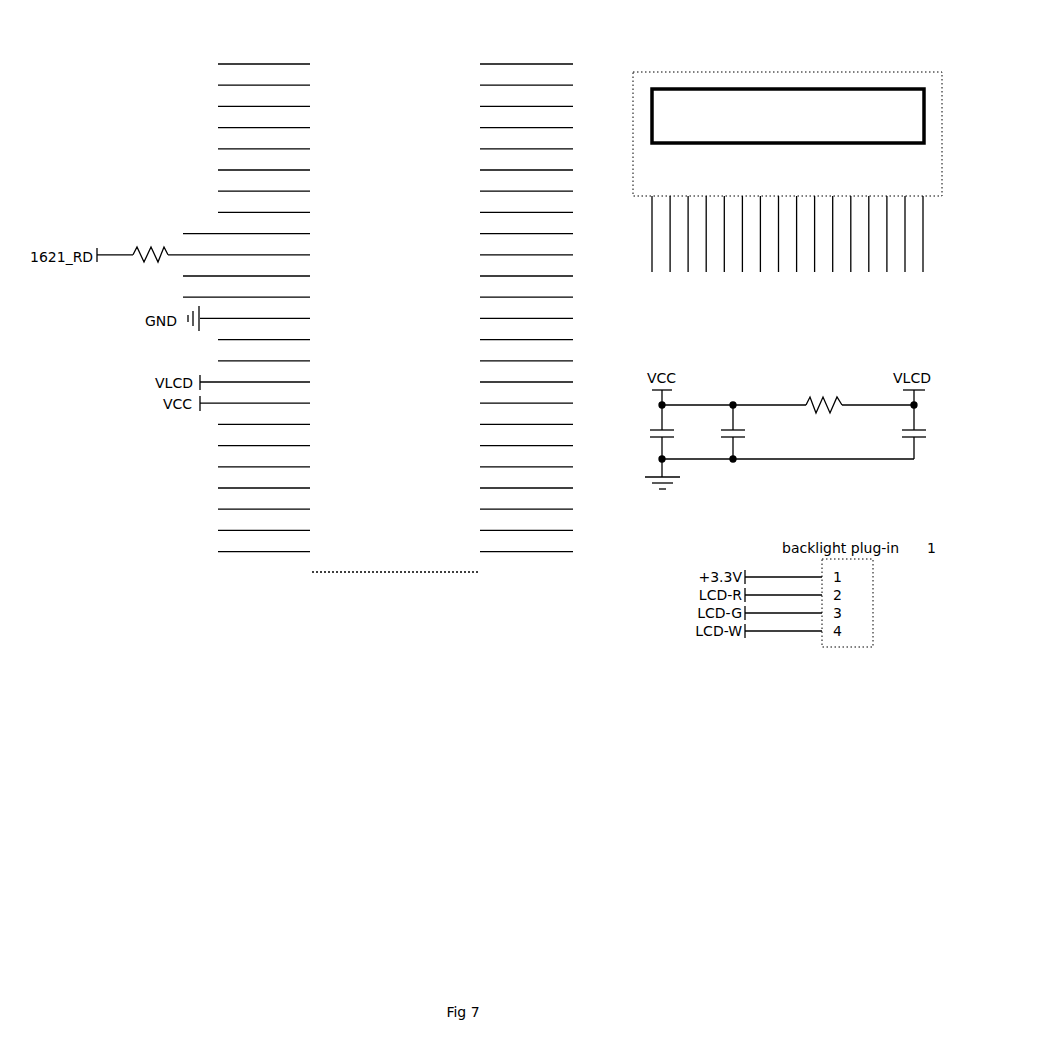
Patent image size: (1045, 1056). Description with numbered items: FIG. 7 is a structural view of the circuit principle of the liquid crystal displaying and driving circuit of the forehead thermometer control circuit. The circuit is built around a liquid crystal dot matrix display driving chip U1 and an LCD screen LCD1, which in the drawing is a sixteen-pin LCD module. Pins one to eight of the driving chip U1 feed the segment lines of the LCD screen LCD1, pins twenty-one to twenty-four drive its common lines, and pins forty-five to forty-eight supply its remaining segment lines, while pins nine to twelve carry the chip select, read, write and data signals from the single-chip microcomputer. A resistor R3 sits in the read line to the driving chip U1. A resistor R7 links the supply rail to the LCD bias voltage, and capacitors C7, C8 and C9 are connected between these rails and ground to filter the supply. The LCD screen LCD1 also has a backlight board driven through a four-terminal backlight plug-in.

The HT1621B-48 LCD driver chip U1 is at (370, 309).
The resistor 0R R3 is at (150, 256).
The resistor 2K R7 is at (824, 405).
The capacitor 104 C7 is at (676, 432).
The capacitor 106 C8 is at (747, 432).
The capacitor 104 C9 is at (928, 432).
The LCD-16PIN-TC60 display LCD1 is at (787, 162).